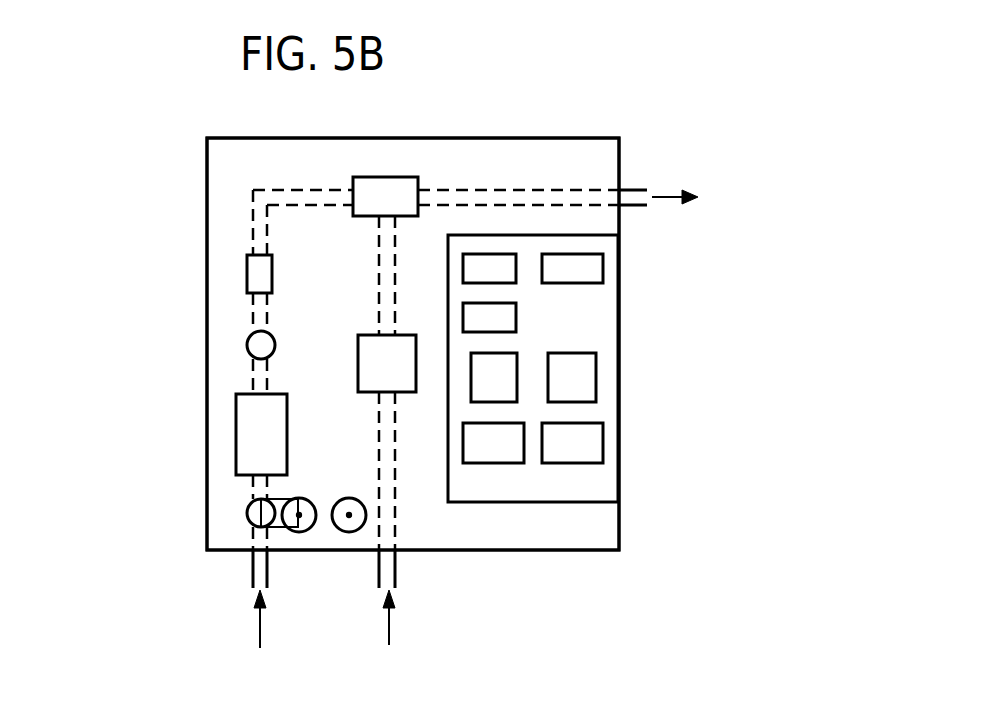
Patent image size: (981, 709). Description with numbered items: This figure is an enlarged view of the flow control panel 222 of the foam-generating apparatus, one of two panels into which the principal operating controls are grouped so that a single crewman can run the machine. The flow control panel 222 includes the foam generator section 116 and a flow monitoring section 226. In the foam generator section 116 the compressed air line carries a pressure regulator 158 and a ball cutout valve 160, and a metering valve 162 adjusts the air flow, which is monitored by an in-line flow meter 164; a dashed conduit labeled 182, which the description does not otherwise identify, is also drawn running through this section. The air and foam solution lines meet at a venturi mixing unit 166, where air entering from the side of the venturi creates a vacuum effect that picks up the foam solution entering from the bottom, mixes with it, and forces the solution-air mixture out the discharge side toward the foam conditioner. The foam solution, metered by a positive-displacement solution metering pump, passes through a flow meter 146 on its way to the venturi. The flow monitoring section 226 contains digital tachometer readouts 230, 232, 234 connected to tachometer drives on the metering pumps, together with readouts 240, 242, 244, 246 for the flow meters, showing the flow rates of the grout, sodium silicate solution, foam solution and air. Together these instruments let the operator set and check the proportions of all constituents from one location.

The foam generator assembly 116 is at (198, 443).
The flow control panel 222 is at (237, 138).
The fluid line 182 is at (262, 188).
The ball cutout valve 160 is at (247, 264).
The metering valve 162 is at (247, 341).
The in-line flow meter 164 is at (236, 420).
The pressure regulator 158 is at (247, 513).
The venturi mixing unit 166 is at (403, 177).
The flow meter 146 is at (410, 380).
The flow monitoring section 226 is at (580, 490).
The tachometer readout 232 is at (490, 258).
The tachometer readout 230 is at (595, 268).
The tachometer readout 234 is at (508, 319).
The flow meter readout 244 is at (509, 359).
The flow meter readout 246 is at (590, 367).
The flow meter readout 240 is at (597, 437).
The flow meter readout 242 is at (503, 457).